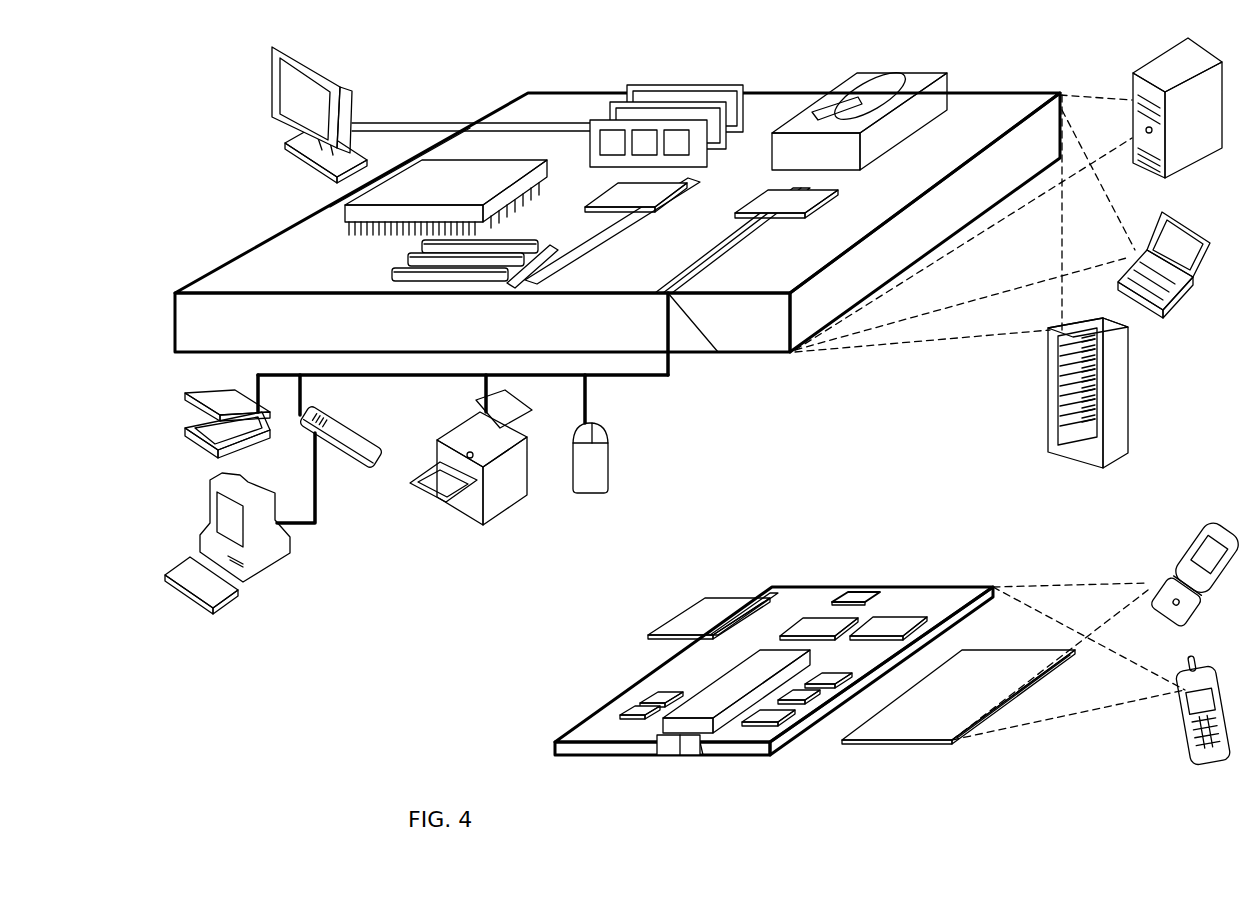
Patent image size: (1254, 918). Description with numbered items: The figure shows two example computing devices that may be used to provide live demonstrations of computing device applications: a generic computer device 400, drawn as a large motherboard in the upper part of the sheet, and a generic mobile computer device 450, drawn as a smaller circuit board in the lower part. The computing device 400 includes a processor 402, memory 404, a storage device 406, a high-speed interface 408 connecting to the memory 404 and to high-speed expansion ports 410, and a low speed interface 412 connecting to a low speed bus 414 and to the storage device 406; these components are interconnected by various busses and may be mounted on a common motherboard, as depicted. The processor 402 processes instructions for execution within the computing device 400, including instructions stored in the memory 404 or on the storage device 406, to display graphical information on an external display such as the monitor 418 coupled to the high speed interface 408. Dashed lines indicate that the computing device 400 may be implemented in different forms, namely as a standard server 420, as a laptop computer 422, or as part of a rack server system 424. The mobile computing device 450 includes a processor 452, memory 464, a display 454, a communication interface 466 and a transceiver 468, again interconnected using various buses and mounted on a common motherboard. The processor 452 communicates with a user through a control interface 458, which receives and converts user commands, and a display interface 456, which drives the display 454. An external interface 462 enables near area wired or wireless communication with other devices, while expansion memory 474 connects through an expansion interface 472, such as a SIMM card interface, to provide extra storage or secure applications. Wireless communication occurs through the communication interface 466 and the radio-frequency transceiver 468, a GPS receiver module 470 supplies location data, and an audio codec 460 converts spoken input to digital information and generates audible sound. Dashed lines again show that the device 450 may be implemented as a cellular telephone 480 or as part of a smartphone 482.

The computing device 400 is at (458, 60).
The processor 402 is at (343, 217).
The memory 404 is at (641, 85).
The storage device 406 is at (600, 190).
The high-speed interface 408 is at (847, 73).
The high-speed expansion ports 410 is at (410, 258).
The low speed interface 412 is at (790, 197).
The low speed bus 414 is at (718, 354).
The display monitor 418 is at (275, 45).
The standard server 420 is at (1132, 79).
The laptop computer 422 is at (1159, 215).
The rack server system 424 is at (1048, 414).
The mobile computer device 450 is at (748, 557).
The processor 452 is at (703, 738).
The display 454 is at (955, 748).
The display interface 456 is at (786, 735).
The control interface 458 is at (817, 713).
The audio codec 460 is at (833, 700).
The external interface 462 is at (680, 754).
The memory 464 is at (630, 702).
The communication interface 466 is at (817, 623).
The transceiver 468 is at (889, 618).
The GPS receiver module 470 is at (852, 598).
The expansion interface 472 is at (746, 595).
The expansion memory 474 is at (688, 598).
The cellular telephone 480 is at (1195, 523).
The smartphone 482 is at (1185, 666).